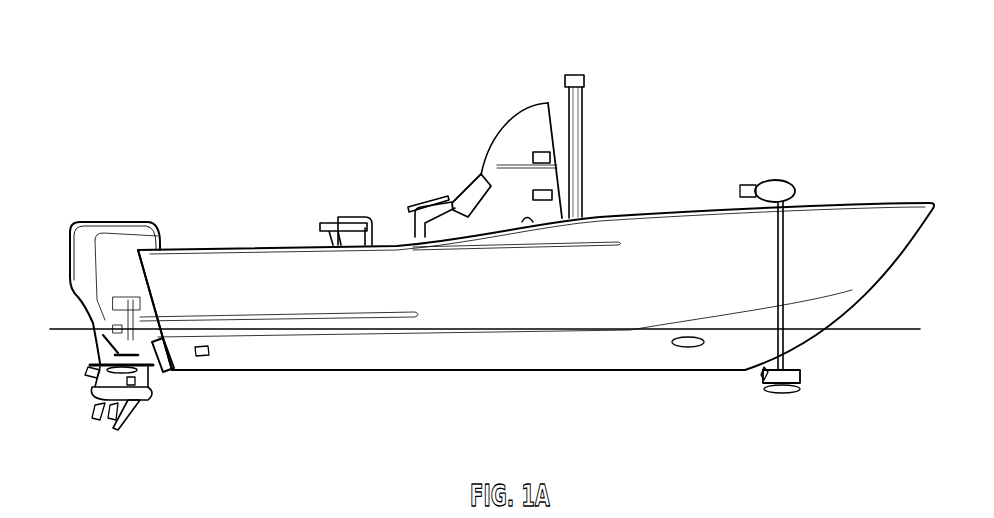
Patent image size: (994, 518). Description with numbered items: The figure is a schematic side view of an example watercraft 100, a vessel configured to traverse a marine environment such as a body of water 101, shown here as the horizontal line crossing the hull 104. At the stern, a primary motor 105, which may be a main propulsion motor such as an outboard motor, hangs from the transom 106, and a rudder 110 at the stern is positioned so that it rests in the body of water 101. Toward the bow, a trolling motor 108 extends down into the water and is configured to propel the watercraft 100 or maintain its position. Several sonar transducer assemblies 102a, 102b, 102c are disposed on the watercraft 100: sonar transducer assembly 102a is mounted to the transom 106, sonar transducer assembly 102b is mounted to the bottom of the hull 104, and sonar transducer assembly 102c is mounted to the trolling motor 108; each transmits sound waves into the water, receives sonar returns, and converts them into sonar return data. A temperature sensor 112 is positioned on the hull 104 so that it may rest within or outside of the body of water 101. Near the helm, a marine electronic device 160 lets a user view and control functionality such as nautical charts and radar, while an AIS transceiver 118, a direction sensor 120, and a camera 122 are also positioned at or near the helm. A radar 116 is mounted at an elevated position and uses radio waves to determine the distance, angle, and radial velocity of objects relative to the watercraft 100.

The watercraft 100 is at (893, 205).
The body of water 101 is at (485, 439).
The sonar transducer assembly 102a is at (127, 378).
The sonar transducer assembly 102b is at (688, 348).
The sonar transducer assembly 102c is at (783, 393).
The hull 104 is at (370, 358).
The primary motor 105 is at (100, 219).
The transom 106 is at (143, 272).
The trolling motor 108 is at (800, 377).
The rudder 110 is at (128, 353).
The temperature sensor 112 is at (202, 358).
The radar 116 is at (572, 74).
The AIS transceiver 118 is at (527, 217).
The direction sensor 120 is at (533, 192).
The camera 122 is at (543, 151).
The marine electronic device 160 is at (468, 190).